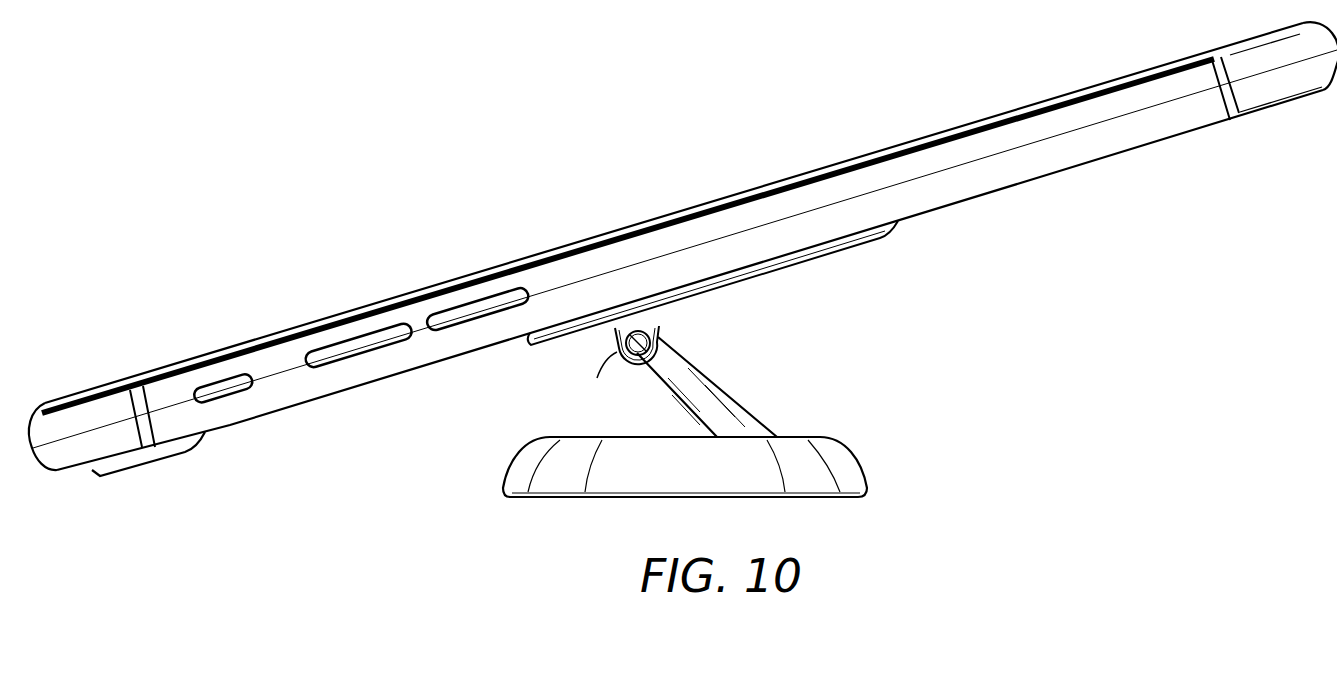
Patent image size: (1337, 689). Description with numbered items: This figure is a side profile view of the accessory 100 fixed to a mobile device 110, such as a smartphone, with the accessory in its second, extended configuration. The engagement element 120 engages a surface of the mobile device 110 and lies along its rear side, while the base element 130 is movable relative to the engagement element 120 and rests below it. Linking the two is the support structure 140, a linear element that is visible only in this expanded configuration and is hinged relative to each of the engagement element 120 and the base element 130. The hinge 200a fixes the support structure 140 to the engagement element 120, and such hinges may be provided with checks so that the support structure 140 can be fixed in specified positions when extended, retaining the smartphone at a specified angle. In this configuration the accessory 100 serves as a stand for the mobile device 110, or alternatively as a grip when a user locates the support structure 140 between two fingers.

The accessory 100 is at (966, 386).
The portable device 110 is at (1040, 102).
The engagement element 120 is at (902, 228).
The base element 130 is at (858, 460).
The support structure 140 is at (707, 374).
The hinge 200a is at (618, 351).